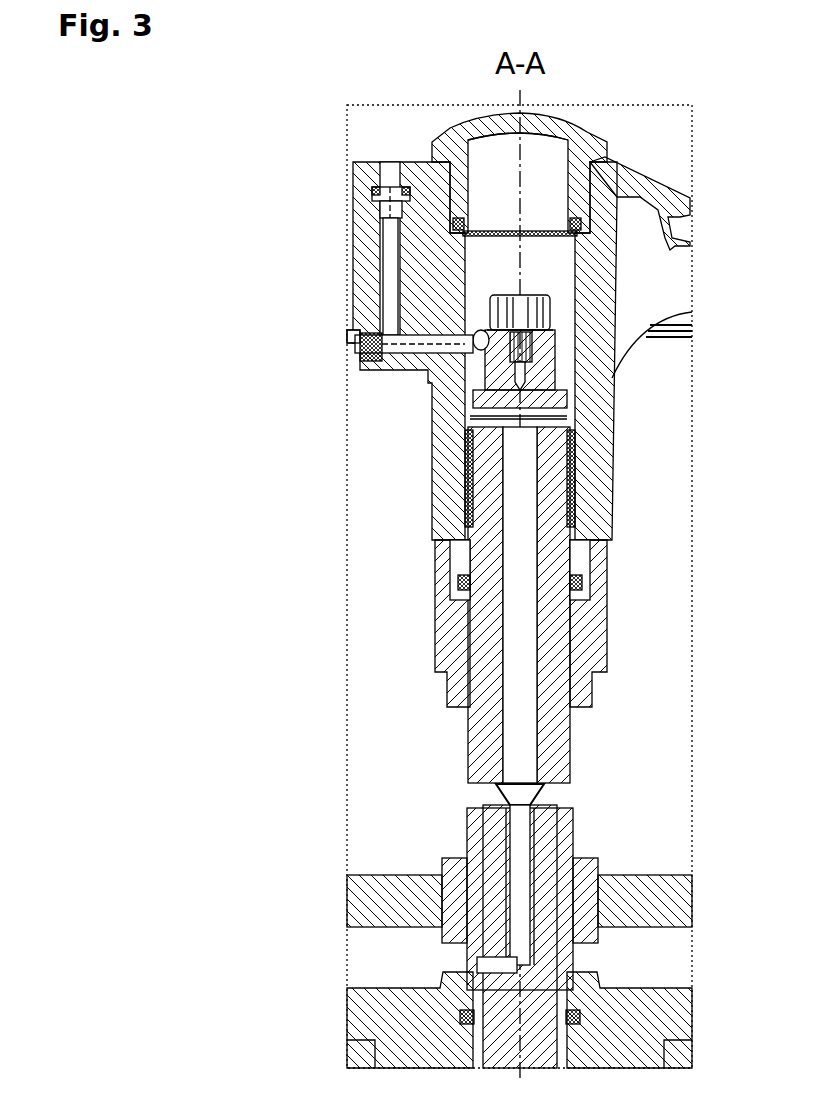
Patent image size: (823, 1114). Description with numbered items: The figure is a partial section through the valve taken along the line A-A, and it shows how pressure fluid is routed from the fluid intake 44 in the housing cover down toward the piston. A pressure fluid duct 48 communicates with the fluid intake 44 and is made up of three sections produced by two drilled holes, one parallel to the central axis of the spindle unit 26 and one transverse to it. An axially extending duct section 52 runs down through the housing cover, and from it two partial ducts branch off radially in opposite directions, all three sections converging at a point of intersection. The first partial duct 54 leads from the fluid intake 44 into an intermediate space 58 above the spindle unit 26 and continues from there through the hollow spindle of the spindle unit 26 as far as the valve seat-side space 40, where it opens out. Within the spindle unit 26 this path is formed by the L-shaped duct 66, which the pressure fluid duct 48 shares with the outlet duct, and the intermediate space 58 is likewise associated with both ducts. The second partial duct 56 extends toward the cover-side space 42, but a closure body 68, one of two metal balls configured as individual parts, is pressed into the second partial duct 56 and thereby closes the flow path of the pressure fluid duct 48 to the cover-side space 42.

The spindle unit 26 is at (553, 487).
The valve seat-side space 40 is at (390, 962).
The cover-side space 42 is at (410, 813).
The fluid intake 44 is at (380, 162).
The pressure fluid duct 48 is at (390, 283).
The duct section 52 is at (390, 255).
The first partial duct 54 is at (415, 372).
The second partial duct 56 is at (350, 340).
The intermediate space 58 is at (555, 262).
The duct 66 is at (508, 517).
The closure body 68 is at (362, 357).